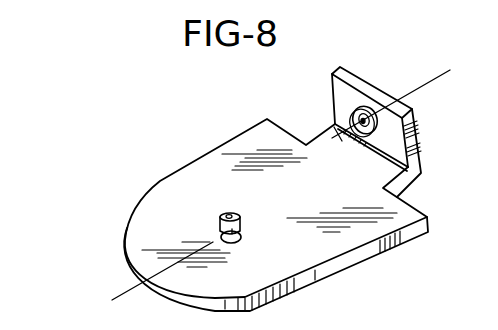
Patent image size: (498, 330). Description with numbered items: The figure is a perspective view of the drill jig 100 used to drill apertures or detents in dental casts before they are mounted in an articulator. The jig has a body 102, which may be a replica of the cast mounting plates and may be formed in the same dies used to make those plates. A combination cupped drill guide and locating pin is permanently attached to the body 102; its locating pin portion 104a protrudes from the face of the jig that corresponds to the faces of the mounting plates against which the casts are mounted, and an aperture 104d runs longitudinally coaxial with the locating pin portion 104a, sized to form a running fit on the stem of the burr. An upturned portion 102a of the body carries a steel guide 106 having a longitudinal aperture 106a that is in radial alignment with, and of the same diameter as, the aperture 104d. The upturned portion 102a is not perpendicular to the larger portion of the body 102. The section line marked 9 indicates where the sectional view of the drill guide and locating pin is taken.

The drill jig 100 is at (211, 113).
The body 102 is at (183, 180).
The upturned portion 102a is at (340, 68).
The locating pin portion 104a is at (221, 223).
The aperture 104d is at (231, 213).
The steel guide 106 is at (346, 108).
The longitudinal aperture 106a is at (377, 128).
The section line for FIG. 9 is at (450, 78).